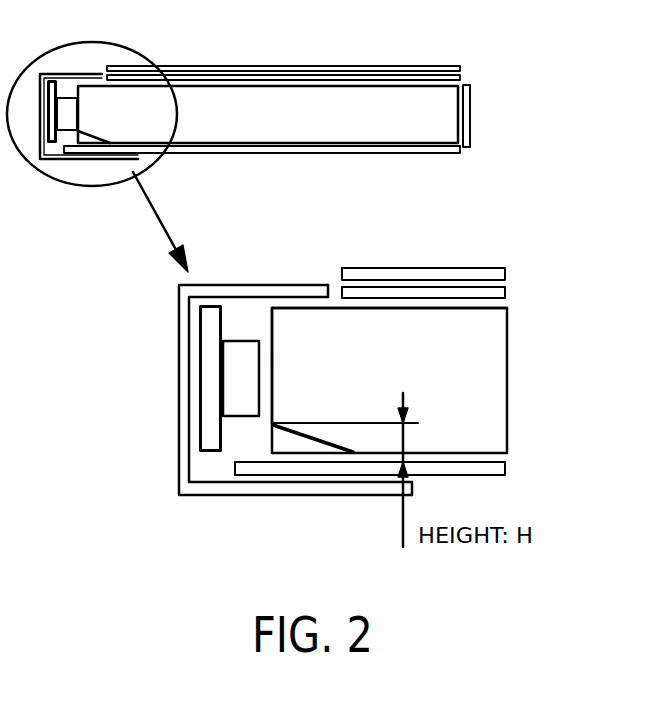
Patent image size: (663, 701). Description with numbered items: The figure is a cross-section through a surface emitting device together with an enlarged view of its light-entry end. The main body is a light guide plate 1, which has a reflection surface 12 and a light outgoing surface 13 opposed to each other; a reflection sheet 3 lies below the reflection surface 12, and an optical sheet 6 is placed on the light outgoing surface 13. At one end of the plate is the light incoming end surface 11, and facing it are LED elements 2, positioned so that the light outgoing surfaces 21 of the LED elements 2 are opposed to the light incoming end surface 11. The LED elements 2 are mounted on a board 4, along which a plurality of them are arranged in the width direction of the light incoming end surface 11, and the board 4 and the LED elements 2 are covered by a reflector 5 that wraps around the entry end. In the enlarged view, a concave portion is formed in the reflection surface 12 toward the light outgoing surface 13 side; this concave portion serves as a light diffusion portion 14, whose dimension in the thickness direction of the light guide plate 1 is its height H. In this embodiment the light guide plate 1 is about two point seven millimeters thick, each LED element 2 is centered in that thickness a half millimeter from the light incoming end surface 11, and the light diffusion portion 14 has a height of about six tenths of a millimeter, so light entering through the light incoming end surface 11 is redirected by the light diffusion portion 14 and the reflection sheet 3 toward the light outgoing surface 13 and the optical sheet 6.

The light guide plate 1 is at (497, 370).
The LED element 2 is at (230, 357).
The reflection sheet 3 is at (507, 470).
The board 4 is at (203, 380).
The reflector 5 is at (178, 406).
The optical sheet 6 is at (507, 266).
The light incoming end surface 11 is at (275, 373).
The reflection surface 12 is at (488, 454).
The light outgoing surface 13 is at (493, 311).
The light diffusion portion 14 is at (295, 446).
The light outgoing surface of LED element 21 is at (274, 357).